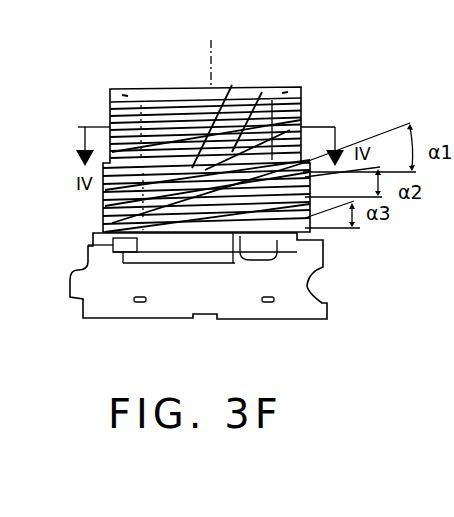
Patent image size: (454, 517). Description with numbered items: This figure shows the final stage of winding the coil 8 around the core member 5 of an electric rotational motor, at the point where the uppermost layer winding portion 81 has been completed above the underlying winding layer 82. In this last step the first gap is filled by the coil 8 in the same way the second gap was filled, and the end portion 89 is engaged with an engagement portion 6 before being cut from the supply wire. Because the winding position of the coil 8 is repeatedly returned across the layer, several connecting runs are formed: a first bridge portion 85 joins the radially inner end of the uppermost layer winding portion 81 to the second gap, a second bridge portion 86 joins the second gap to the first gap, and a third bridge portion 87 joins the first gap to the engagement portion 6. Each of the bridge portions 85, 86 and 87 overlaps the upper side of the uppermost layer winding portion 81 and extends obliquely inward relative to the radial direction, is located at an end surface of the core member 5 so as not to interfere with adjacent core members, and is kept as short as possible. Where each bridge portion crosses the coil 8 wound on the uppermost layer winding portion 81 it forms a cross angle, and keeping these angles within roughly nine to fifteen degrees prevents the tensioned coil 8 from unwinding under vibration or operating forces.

The core member 5 is at (164, 83).
The coil 8 is at (98, 118).
The first bridge portion 85 is at (232, 85).
The second layer wire 82 is at (262, 92).
The uppermost layer winding portion 81 is at (290, 130).
The second bridge portion 86 is at (303, 163).
The engagement portion 6 is at (213, 264).
The third bridge portion 87 is at (234, 265).
The end portion 89 is at (308, 304).